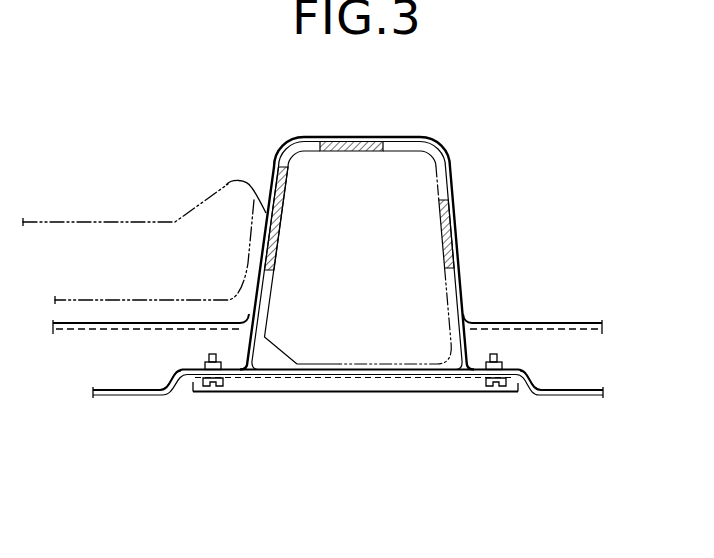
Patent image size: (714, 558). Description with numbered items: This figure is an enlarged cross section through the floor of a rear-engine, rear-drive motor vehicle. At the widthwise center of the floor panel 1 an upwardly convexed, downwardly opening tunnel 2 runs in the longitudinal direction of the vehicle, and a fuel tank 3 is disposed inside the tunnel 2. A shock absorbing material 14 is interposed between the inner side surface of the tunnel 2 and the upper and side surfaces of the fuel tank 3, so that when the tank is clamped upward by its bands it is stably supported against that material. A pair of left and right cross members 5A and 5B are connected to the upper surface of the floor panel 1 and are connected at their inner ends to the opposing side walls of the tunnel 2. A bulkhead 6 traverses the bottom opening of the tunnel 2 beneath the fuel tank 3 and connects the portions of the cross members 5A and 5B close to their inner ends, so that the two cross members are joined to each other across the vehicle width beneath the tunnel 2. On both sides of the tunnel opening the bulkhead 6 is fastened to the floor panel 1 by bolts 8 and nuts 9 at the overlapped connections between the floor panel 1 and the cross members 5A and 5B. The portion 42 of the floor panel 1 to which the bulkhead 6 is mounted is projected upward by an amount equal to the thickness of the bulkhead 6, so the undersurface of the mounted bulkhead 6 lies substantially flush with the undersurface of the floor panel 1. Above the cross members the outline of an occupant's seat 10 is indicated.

The floor panel 1 is at (577, 397).
The tunnel 2 is at (400, 136).
The fuel tank 3 is at (437, 161).
The left cross member 5A is at (130, 378).
The right cross member 5B is at (538, 321).
The bulkhead 6 is at (362, 380).
The bolts 8 is at (215, 396).
The nuts 9 is at (205, 363).
The occupant's seat 10 is at (127, 231).
The shock absorbing material 14 is at (347, 137).
The projected portion of floor panel 42 is at (172, 370).